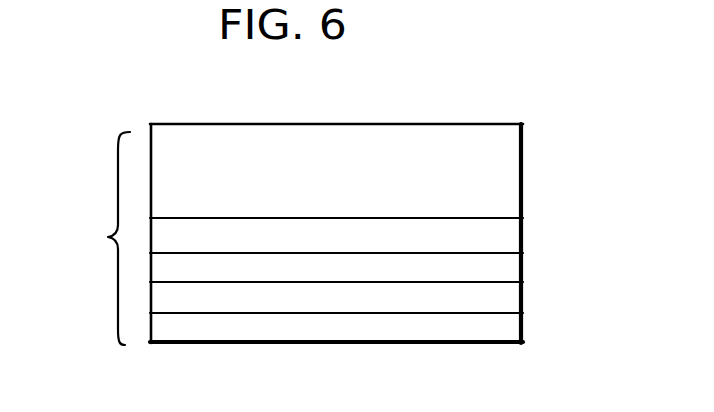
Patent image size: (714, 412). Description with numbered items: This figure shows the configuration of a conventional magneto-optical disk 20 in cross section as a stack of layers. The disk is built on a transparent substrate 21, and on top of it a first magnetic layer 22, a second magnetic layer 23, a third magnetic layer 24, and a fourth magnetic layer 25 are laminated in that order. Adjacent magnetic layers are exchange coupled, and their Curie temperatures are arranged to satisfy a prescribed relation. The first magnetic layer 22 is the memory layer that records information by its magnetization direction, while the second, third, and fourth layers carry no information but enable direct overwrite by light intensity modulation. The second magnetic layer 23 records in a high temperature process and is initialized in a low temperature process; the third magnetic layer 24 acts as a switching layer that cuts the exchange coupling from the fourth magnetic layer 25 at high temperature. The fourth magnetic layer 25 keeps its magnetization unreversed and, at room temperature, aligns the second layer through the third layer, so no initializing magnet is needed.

The magneto-optical disk 20 is at (95, 238).
The transparent substrate 21 is at (507, 182).
The first magnetic layer 22 is at (512, 239).
The second magnetic layer 23 is at (512, 272).
The third magnetic layer 24 is at (512, 302).
The fourth magnetic layer 25 is at (508, 336).